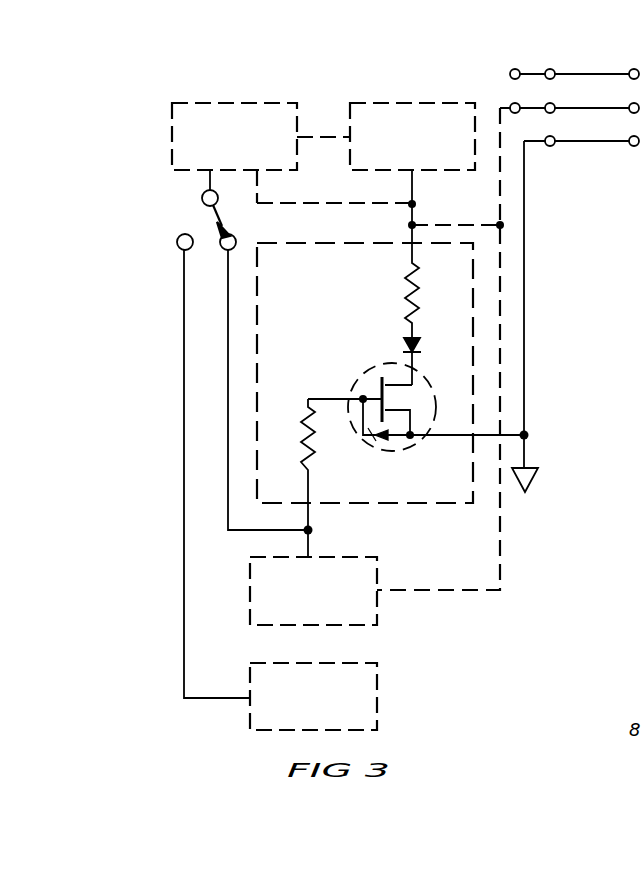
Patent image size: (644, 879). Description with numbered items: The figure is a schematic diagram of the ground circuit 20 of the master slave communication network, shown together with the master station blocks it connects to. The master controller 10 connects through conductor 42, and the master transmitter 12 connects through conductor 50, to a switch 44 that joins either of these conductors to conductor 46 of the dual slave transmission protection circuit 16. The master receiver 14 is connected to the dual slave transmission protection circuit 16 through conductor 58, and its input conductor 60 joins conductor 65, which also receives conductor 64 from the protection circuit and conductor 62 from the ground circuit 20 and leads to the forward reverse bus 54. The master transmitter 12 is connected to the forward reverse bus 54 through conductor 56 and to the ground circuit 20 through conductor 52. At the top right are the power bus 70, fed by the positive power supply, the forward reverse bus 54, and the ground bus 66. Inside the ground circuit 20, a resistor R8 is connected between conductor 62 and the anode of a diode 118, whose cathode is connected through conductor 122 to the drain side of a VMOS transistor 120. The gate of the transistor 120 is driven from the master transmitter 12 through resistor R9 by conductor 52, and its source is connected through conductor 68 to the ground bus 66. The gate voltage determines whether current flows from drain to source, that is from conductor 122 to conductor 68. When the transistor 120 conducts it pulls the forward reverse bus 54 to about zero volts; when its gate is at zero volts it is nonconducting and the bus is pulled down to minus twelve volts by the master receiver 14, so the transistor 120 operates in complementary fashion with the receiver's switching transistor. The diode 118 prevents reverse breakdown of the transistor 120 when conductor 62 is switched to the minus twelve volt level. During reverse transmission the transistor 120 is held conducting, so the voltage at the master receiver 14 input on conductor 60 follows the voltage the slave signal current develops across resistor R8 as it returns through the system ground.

The master controller 10 is at (272, 663).
The master transmitter 12 is at (268, 557).
The master receiver 14 is at (380, 103).
The dual slave transmission protection circuit 16 is at (196, 103).
The ground circuit 20 is at (390, 504).
The conductor 42 is at (184, 312).
The switch 44 is at (212, 222).
The conductor 46 is at (203, 194).
The conductor 50 is at (228, 313).
The conductor 52 is at (308, 545).
The forward reverse bus 54 is at (597, 108).
The conductor 56 is at (500, 518).
The conductor 58 is at (345, 133).
The conductor 60 is at (412, 190).
The conductor 62 is at (412, 225).
The conductor 64 is at (257, 182).
The conductor 65 is at (375, 205).
The ground bus 66 is at (597, 141).
The conductor 68 is at (524, 352).
The power bus 70 is at (597, 74).
The diode 118 is at (408, 344).
The VMOS transistor 120 is at (368, 376).
The conductor 122 is at (415, 370).
The resistor R8 is at (392, 281).
The resistor R9 is at (290, 464).